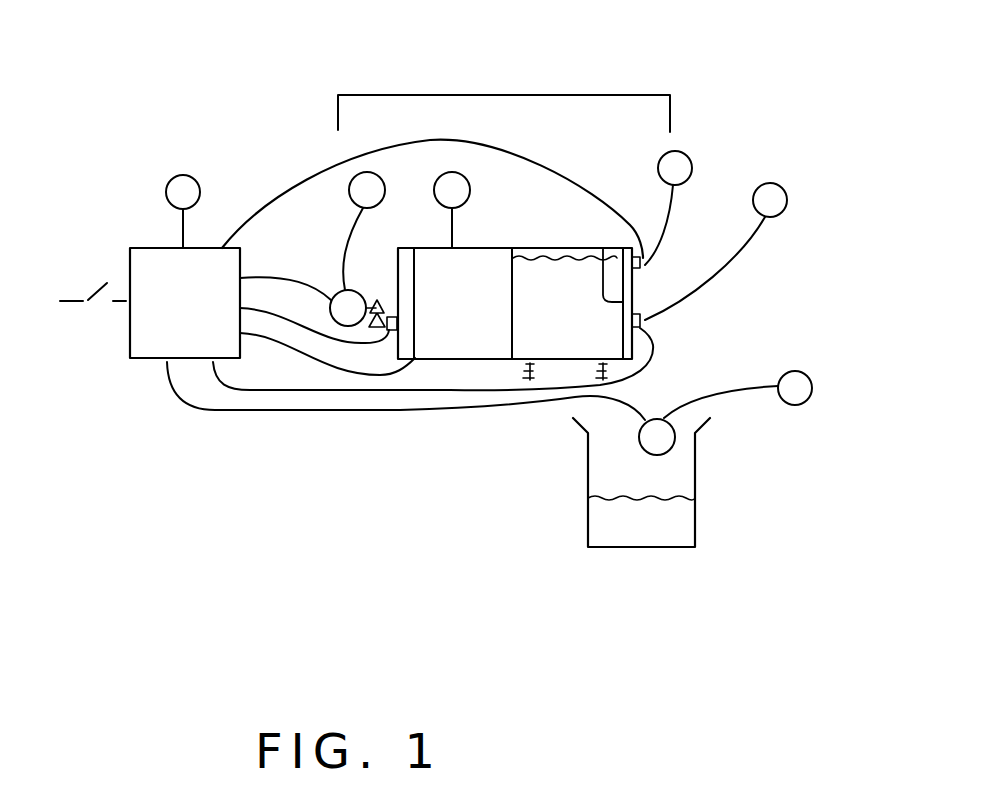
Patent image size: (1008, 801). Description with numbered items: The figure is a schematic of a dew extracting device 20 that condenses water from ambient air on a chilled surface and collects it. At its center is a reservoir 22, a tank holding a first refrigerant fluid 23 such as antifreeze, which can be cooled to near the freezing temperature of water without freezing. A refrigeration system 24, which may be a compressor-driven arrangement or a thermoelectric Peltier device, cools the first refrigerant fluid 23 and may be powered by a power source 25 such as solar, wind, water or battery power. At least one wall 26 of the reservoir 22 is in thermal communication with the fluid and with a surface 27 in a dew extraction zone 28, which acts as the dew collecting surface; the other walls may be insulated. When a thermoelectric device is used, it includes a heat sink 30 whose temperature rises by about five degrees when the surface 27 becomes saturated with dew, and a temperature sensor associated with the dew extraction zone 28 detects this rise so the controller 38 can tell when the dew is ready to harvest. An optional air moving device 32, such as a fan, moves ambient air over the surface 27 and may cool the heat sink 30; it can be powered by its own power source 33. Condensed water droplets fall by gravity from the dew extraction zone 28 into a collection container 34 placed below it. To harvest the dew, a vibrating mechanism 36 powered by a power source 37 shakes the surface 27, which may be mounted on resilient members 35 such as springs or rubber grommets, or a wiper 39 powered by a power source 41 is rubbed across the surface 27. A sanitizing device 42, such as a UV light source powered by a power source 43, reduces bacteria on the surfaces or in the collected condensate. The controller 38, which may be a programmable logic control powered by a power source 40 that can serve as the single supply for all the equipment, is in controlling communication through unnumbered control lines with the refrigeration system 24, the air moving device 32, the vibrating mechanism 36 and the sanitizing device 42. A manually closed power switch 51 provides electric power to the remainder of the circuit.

The dew extracting device 20 is at (267, 460).
The reservoir 22 is at (565, 246).
The first refrigerant fluid 23 is at (588, 262).
The refrigeration system 24 is at (483, 250).
The power source 25 is at (453, 172).
The wall 26 is at (603, 250).
The surface 27 is at (643, 293).
The dew extraction zone 28 is at (508, 90).
The heat sink 30 is at (406, 248).
The air moving device 32 is at (377, 300).
The power source 33 is at (677, 521).
The collection container 34 is at (700, 472).
The resilient members 35 is at (520, 372).
The vibrating mechanism 36 is at (645, 265).
The power source 37 is at (680, 150).
The controller 38 is at (128, 345).
The wiper 39 is at (645, 327).
The power source 40 is at (202, 187).
The power source 41 is at (793, 200).
The sanitizing device 42 is at (655, 419).
The power source 43 is at (812, 382).
The power switch 51 is at (95, 285).